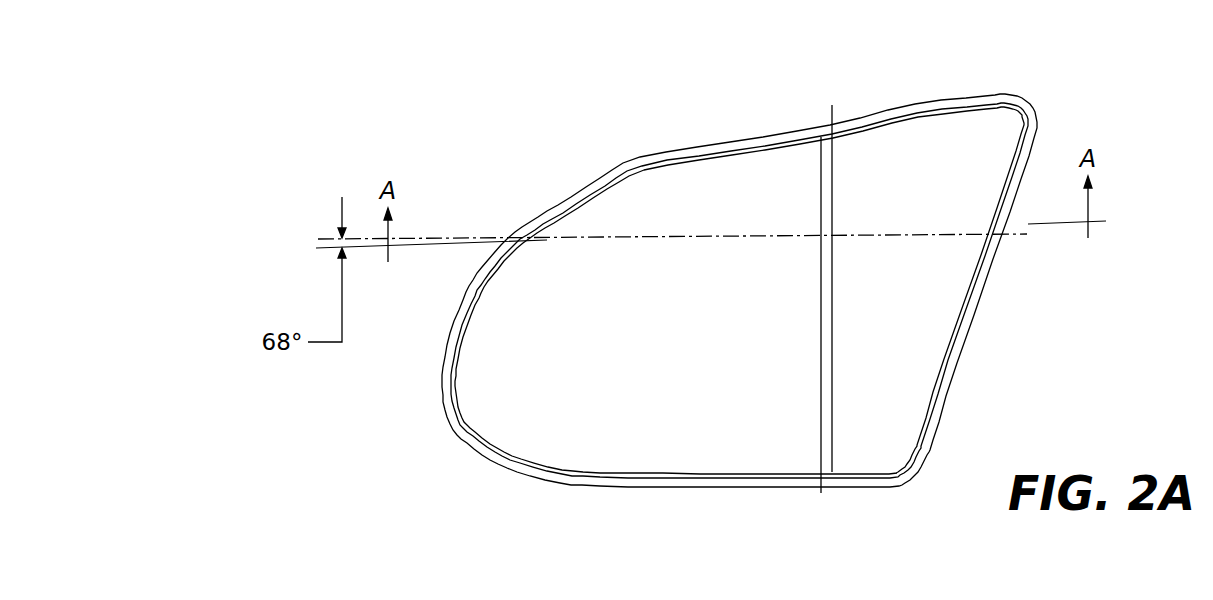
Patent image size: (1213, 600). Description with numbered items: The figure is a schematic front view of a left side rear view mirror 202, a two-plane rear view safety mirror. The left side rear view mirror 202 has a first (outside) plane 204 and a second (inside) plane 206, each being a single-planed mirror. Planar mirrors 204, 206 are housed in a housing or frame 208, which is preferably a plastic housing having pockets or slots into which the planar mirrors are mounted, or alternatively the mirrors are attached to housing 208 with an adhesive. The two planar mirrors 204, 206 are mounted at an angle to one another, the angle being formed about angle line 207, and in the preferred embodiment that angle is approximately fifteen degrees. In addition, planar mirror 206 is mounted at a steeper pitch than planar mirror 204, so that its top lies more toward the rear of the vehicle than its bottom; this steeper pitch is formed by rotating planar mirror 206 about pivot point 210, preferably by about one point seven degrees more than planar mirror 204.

The left side rear view mirror 202 is at (917, 95).
The first (outside) plane 204 is at (739, 290).
The second (inside) plane 206 is at (905, 295).
The angle line 207 is at (821, 409).
The housing 208 is at (737, 488).
The pivot point 210 is at (818, 210).